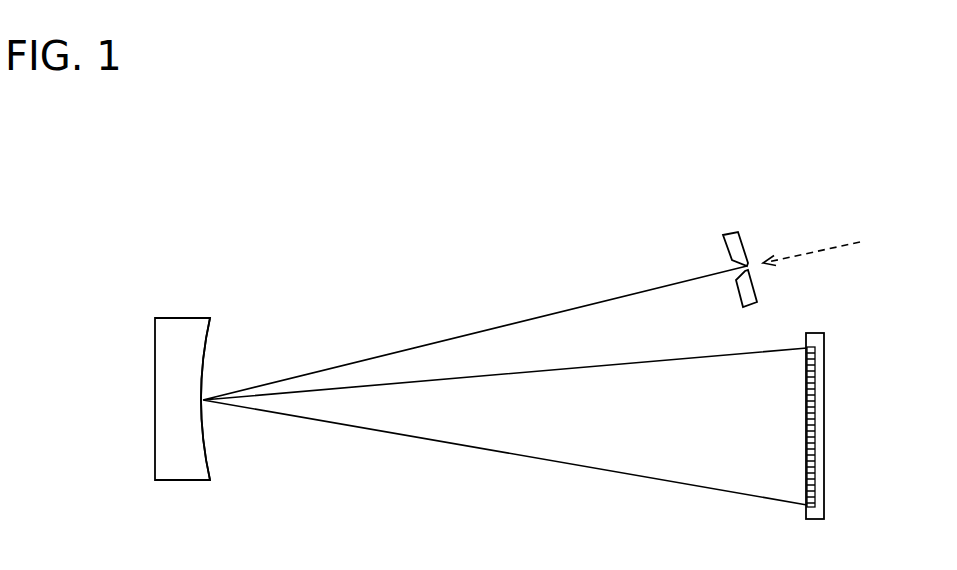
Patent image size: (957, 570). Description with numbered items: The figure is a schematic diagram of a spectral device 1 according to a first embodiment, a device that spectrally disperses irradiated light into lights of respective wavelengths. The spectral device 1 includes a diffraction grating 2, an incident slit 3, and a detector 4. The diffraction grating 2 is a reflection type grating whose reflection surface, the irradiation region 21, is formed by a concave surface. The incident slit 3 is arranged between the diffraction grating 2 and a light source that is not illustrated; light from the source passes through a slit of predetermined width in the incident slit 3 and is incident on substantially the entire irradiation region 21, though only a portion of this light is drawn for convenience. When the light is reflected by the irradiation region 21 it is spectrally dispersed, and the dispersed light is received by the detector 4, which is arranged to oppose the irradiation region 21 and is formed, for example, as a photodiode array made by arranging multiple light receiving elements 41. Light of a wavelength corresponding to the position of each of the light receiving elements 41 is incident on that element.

The spectral device 1 is at (740, 197).
The diffraction grating 2 is at (175, 317).
The irradiation region 21 is at (207, 353).
The incident slit 3 is at (745, 245).
The detector 4 is at (812, 416).
The light receiving elements 41 is at (807, 438).